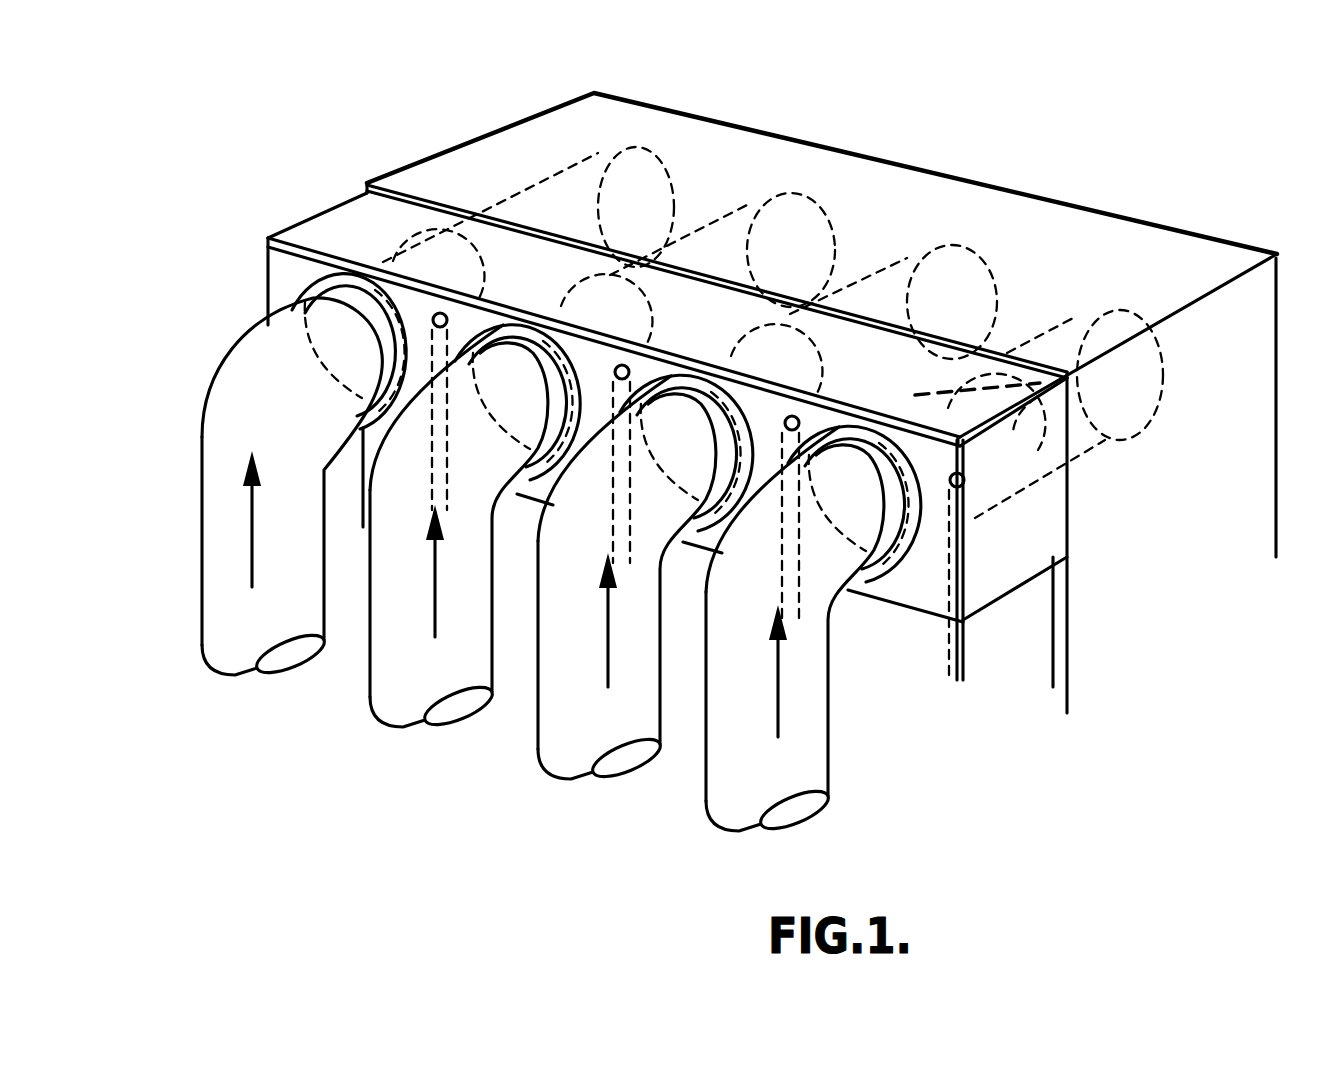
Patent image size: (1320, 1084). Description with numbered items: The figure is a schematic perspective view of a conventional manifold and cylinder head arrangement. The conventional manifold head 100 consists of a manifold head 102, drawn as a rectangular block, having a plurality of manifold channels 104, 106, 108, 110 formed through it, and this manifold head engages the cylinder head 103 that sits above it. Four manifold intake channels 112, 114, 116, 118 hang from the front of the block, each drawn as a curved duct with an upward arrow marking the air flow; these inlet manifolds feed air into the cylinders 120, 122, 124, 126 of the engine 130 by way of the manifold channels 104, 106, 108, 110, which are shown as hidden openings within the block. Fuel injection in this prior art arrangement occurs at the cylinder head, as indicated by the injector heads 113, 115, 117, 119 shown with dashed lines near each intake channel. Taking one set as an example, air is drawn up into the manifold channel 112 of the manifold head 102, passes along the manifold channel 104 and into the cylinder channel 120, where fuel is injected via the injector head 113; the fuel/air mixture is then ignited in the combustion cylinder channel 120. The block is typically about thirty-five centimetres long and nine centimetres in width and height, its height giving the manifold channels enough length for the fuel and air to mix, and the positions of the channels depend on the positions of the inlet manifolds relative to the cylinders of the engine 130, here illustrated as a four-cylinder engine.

The manifold head 100 is at (458, 236).
The manifold head 102 is at (320, 213).
The cylinder head 103 is at (553, 160).
The manifold channel 104 is at (480, 249).
The manifold channel 106 is at (648, 292).
The manifold channel 108 is at (827, 343).
The manifold channel 110 is at (1083, 387).
The manifold intake channel 112 is at (225, 545).
The injector head 113 is at (445, 400).
The manifold intake channel 114 is at (377, 627).
The injector head 115 is at (620, 447).
The manifold intake channel 116 is at (540, 660).
The injector head 117 is at (787, 497).
The manifold intake channel 118 is at (723, 757).
The injector head 119 is at (953, 640).
The cylinder channel 120 is at (638, 177).
The cylinder 122 is at (790, 227).
The cylinder 124 is at (958, 292).
The cylinder 126 is at (1110, 312).
The engine 130 is at (1152, 628).